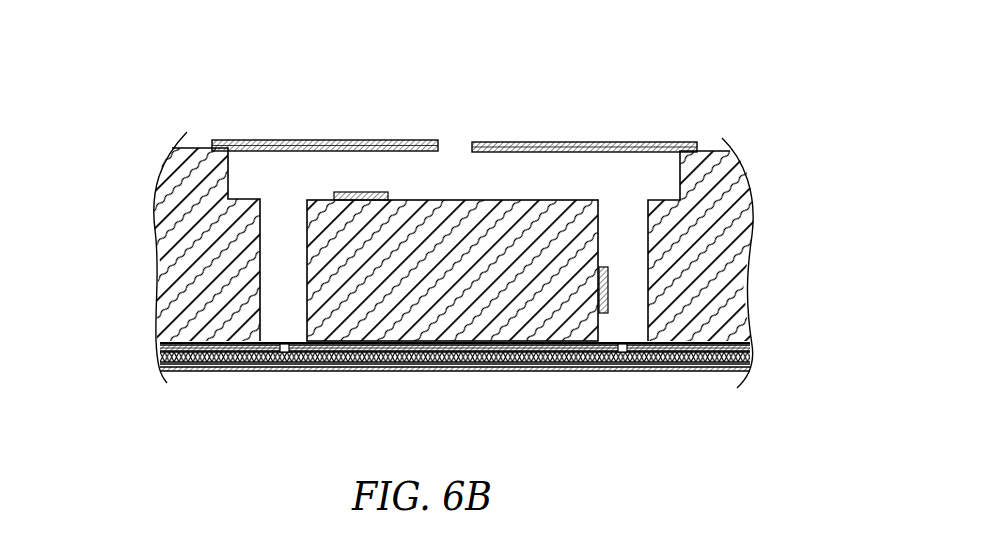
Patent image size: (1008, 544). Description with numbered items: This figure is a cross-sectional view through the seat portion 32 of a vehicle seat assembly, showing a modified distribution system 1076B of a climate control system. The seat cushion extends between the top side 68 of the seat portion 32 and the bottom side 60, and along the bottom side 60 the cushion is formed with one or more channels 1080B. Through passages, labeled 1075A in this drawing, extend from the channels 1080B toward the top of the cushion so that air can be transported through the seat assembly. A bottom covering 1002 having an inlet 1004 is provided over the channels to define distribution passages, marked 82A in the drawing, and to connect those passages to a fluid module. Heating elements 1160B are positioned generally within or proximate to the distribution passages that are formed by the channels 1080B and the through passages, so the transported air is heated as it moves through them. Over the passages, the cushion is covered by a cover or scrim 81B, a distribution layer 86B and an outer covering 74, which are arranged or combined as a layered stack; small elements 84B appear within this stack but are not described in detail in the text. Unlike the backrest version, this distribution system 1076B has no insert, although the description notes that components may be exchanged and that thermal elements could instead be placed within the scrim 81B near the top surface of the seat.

The seat portion 32 is at (300, 72).
The distribution system 1076B is at (202, 96).
The bottom covering 1002 is at (362, 139).
The inlet 1004 is at (472, 145).
The bottom side 60 is at (707, 143).
The heating elements 1160B is at (368, 192).
The cavity 82A is at (546, 184).
The housing side wall 1075A is at (260, 235).
The channels 1080B is at (538, 205).
The via / pad 84B is at (285, 352).
The distribution layer 86B is at (376, 362).
The scrim 81B is at (458, 357).
The top side 68 is at (481, 381).
The covering 74 is at (712, 373).